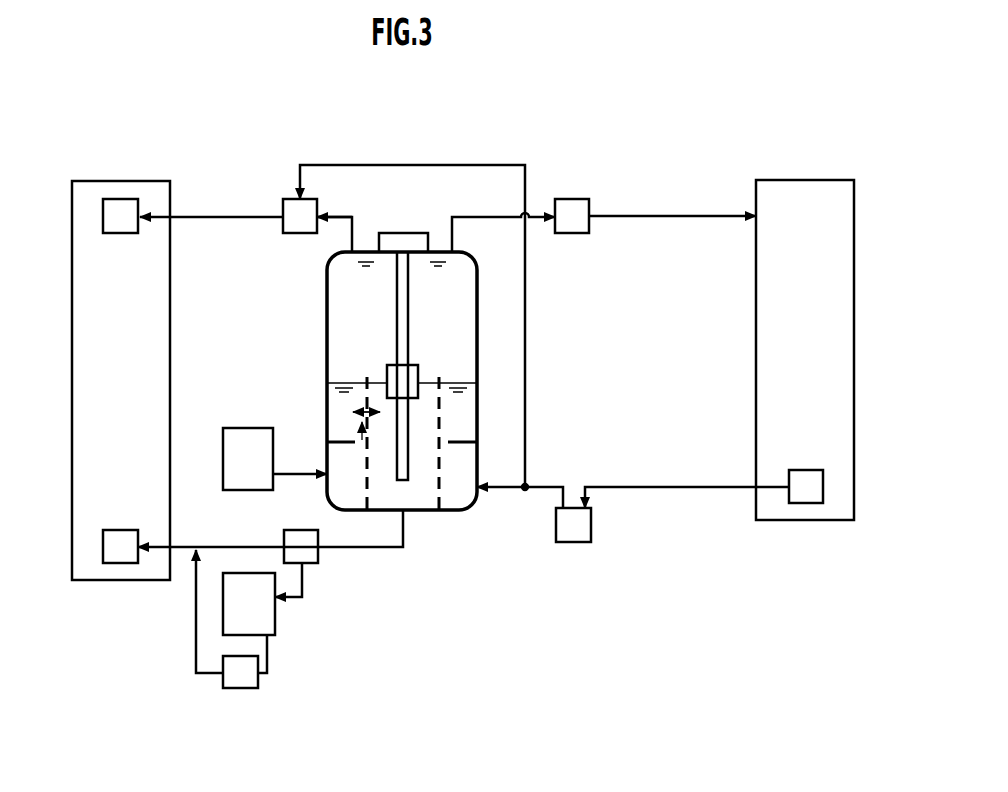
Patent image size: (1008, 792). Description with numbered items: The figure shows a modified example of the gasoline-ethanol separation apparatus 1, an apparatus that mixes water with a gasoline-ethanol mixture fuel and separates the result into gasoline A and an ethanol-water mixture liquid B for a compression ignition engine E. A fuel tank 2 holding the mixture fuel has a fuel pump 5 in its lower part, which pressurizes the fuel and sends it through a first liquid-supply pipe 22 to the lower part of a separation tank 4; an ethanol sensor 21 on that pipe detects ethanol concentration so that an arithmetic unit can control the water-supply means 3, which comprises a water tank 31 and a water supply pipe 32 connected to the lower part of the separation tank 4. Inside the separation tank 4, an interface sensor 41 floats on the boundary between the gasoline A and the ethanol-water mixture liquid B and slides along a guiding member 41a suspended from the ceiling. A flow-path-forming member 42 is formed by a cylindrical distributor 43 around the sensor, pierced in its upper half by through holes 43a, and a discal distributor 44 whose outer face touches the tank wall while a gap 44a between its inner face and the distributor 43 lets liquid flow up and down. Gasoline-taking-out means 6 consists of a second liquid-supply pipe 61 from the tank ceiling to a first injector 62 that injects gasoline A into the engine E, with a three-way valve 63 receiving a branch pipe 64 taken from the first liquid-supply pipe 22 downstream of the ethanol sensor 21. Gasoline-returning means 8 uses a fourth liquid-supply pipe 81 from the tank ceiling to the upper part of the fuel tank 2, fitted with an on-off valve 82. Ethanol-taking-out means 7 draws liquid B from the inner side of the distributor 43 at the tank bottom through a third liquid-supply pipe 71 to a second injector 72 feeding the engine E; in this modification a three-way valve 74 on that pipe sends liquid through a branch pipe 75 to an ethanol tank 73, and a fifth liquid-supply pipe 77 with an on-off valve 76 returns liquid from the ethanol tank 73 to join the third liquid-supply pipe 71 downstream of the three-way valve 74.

The gasoline-ethanol separation apparatus 1 is at (281, 128).
The fuel tank 2 is at (855, 208).
The water-supply means 3 is at (255, 432).
The separation tank 4 is at (325, 312).
The fuel pump 5 is at (805, 504).
The gasoline-taking-out means 6 is at (246, 201).
The ethanol-taking-out means 7 is at (273, 568).
The gasoline-returning means 8 is at (604, 232).
The ethanol sensor 21 is at (573, 543).
The first liquid-supply pipe 22 is at (552, 484).
The water tank 31 is at (223, 447).
The water supply pipe 32 is at (292, 476).
The interface sensor 41 is at (416, 365).
The guiding member 41a is at (397, 322).
The flow-path-forming member 42 is at (411, 499).
The cylindrical distributor 43 is at (443, 480).
The through holes 43a is at (443, 388).
The discal distributor 44 is at (463, 447).
The gap 44a is at (447, 438).
The second liquid-supply pipe 61 is at (340, 220).
The first injector 62 is at (120, 198).
The three-way valve 63 is at (290, 199).
The branch pipe 64 is at (403, 164).
The third liquid-supply pipe 71 is at (263, 548).
The second injector 72 is at (120, 563).
The ethanol tank 73 is at (278, 628).
The three-way valve 74 is at (284, 536).
The branch pipe 75 is at (303, 592).
The on-off valve 76 is at (240, 689).
The fifth liquid-supply pipe 77 is at (253, 647).
The fourth liquid-supply pipe 81 is at (527, 220).
The on-off valve 82 is at (572, 199).
The engine E is at (72, 208).
The gasoline A is at (327, 352).
The ethanol-water mixture liquid B is at (327, 405).